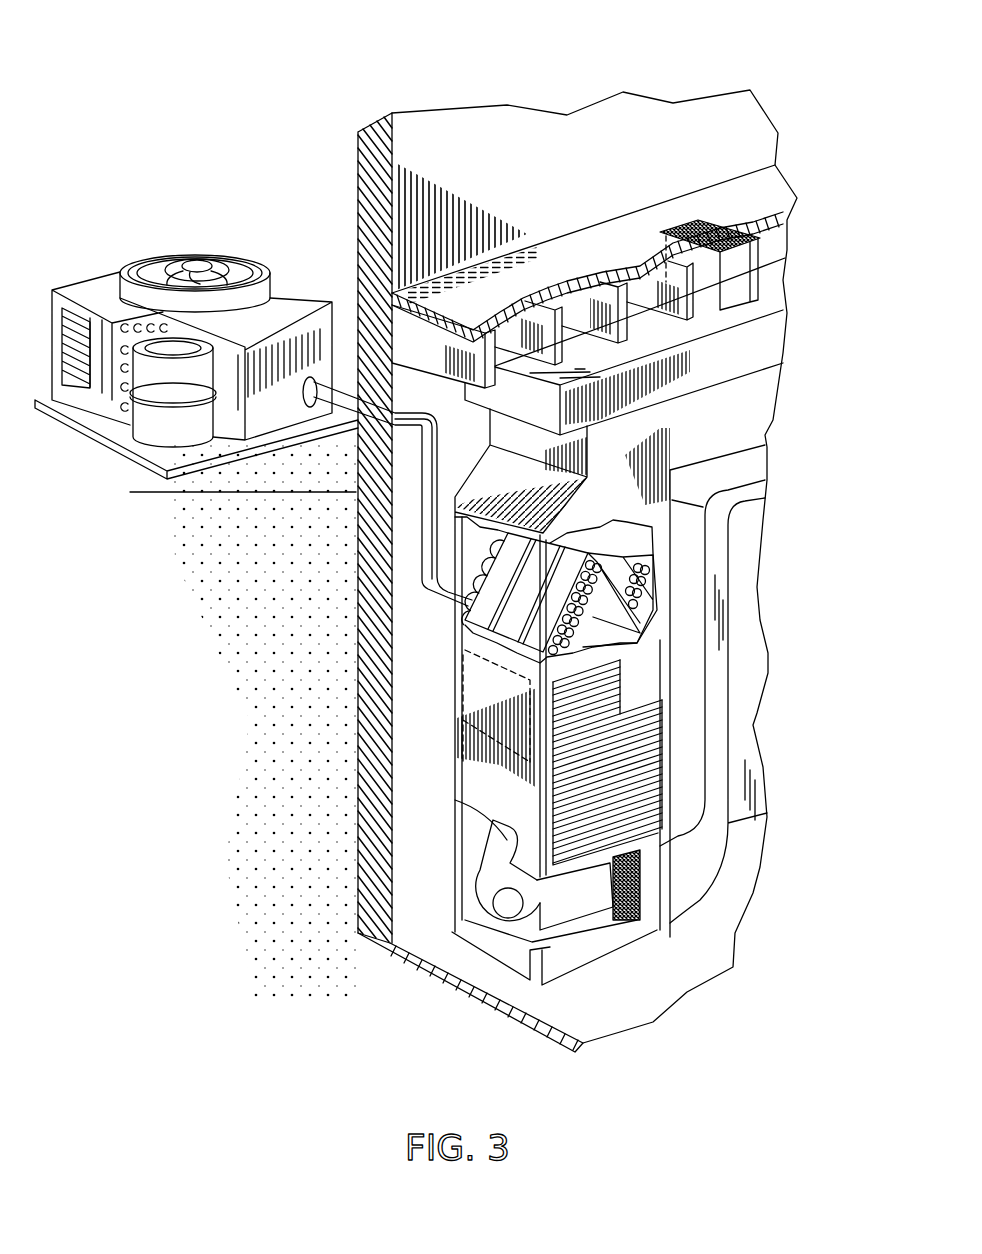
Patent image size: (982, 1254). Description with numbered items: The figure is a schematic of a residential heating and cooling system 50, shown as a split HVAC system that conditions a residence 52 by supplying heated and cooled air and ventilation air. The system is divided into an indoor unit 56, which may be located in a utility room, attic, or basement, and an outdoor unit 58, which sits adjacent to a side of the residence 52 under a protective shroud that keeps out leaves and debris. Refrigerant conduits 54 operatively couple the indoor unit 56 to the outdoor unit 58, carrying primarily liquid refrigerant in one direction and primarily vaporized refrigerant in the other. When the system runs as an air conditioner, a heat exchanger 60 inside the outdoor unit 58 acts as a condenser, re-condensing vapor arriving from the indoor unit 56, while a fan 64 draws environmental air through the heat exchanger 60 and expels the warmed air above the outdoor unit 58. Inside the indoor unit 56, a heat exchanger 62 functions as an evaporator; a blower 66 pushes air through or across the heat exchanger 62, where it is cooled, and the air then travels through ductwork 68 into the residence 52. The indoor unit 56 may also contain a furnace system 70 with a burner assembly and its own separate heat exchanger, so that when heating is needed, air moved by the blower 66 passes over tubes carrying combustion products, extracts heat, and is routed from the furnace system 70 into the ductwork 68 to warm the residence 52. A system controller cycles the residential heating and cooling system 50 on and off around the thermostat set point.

The residential heating and cooling system 50 is at (192, 87).
The residence 52 is at (490, 135).
The refrigerant conduits 54 is at (420, 505).
The indoor unit 56 is at (436, 742).
The outdoor unit 58 is at (155, 248).
The heat exchanger 60 is at (125, 328).
The heat exchanger 62 is at (510, 630).
The fan 64 is at (212, 263).
The blower 66 is at (502, 927).
The ductwork 68 is at (713, 356).
The furnace system 70 is at (470, 688).